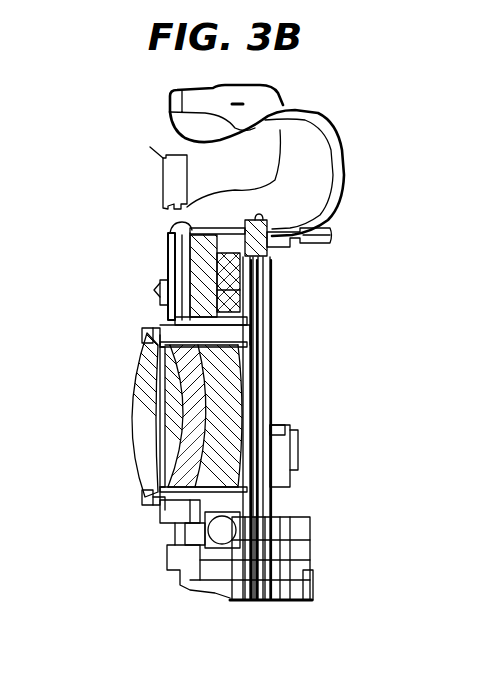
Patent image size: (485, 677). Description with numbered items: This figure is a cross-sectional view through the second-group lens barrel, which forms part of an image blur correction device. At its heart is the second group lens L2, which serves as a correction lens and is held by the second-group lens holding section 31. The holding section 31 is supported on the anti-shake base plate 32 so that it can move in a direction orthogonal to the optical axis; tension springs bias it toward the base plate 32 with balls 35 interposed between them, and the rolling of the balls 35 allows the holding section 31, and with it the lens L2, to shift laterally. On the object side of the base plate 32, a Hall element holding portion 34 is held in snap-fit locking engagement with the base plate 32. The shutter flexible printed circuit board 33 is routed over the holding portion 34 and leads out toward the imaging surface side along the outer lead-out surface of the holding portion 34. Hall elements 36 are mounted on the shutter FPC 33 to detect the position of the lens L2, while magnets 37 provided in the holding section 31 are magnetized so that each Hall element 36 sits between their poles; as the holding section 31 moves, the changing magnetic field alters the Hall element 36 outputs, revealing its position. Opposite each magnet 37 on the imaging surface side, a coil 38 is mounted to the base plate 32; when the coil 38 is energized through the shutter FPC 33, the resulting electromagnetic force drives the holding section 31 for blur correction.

The second group lens L2 is at (143, 372).
The second-group lens holding section 31 is at (157, 503).
The anti-shake base plate 32 is at (246, 590).
The shutter flexible printed circuit board 33 is at (343, 148).
The Hall element holding portion 34 is at (170, 236).
The balls 35 is at (194, 583).
The Hall elements 36 is at (180, 285).
The magnets 37 is at (178, 219).
The coil 38 is at (233, 272).